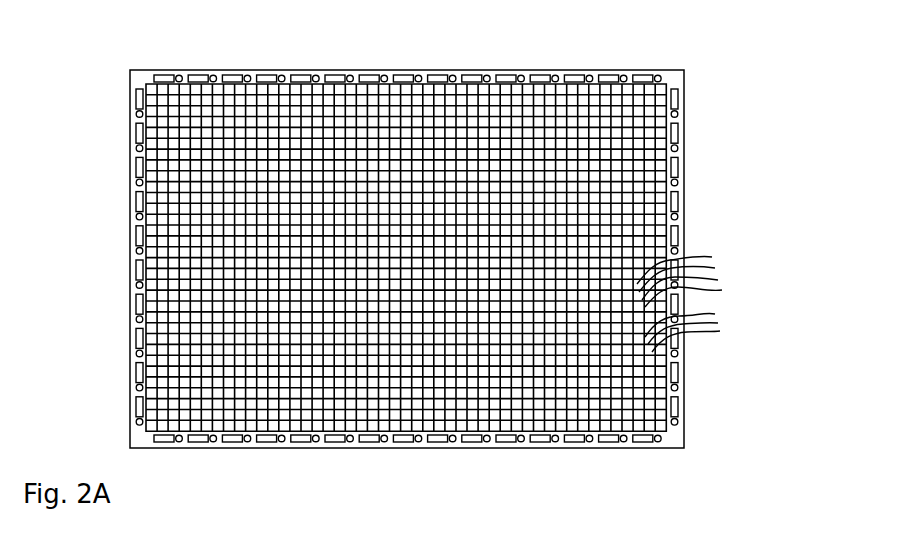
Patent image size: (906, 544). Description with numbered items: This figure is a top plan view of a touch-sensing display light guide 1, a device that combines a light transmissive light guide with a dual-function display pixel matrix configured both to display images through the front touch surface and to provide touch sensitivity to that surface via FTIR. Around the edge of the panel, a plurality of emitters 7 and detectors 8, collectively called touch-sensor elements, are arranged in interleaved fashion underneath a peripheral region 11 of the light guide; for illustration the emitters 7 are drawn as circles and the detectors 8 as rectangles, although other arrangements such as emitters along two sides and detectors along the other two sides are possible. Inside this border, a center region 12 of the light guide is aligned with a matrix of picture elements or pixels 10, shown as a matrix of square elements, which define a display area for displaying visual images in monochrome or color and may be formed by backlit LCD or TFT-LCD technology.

The touch-sensing display light guide 1 is at (714, 104).
The emitters 7 is at (140, 251).
The detectors 8 is at (140, 234).
The pixels 10 is at (694, 303).
The peripheral region 11 is at (680, 438).
The center region 12 is at (600, 246).